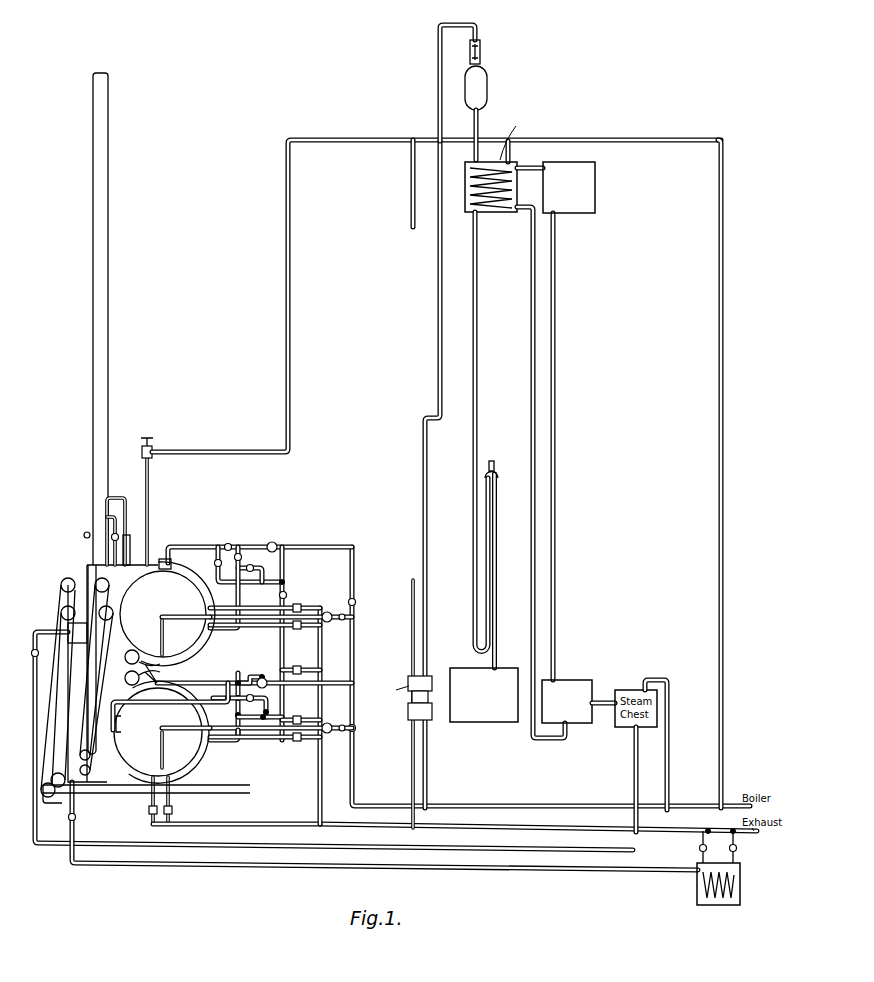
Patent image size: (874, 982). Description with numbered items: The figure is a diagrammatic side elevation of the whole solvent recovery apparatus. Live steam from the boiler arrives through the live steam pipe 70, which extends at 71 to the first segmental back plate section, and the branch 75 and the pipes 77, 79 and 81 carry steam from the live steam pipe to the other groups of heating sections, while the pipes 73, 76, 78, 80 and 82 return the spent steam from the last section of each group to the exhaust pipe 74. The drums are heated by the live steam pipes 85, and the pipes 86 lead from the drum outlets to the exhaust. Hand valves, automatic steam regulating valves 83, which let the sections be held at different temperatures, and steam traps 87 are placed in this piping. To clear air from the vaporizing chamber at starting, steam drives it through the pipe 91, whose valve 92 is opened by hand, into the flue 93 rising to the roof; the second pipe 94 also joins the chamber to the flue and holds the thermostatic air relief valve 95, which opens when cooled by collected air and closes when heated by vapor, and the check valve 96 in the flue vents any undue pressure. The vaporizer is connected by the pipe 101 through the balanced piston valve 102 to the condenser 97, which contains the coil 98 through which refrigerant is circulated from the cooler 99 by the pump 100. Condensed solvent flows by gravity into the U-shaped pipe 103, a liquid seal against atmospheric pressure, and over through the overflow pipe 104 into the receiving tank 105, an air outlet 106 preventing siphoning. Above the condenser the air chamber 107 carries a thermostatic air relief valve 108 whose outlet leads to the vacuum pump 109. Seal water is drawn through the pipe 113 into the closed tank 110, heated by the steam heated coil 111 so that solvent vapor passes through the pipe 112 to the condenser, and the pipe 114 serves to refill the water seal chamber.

The live steam pipe 70 is at (352, 786).
The live steam pipe extension 71 is at (168, 558).
The pipe 73 is at (258, 603).
The exhaust pipe 74 is at (330, 808).
The branch of the live steam pipe 75 is at (235, 630).
The pipe 76 is at (278, 668).
The pipe 77 is at (237, 686).
The pipe 78 is at (297, 717).
The pipe 79 is at (226, 743).
The pipe 80 is at (172, 803).
The pipe 81 is at (121, 723).
The pipe 82 is at (148, 808).
The automatic steam regulating valve 83 is at (275, 544).
The live steam pipe 85 is at (180, 612).
The pipe 86 is at (178, 625).
The steam trap 87 is at (296, 632).
The pipe 91 is at (110, 512).
The valve 92 is at (110, 538).
The flue 93 is at (93, 426).
The second pipe 94 is at (112, 497).
The thermostatic air relief valve 95 is at (133, 533).
The check valve 96 is at (87, 531).
The condenser 97 is at (480, 165).
The coil 98 is at (497, 200).
The cooler 99 is at (596, 207).
The pump 100 is at (574, 681).
The pipe 101 is at (346, 140).
The balanced piston valve 102 is at (154, 448).
The U-shaped pipe 103 is at (472, 550).
The overflow pipe 104 is at (497, 550).
The receiving tank 105 is at (492, 724).
The air outlet 106 is at (494, 461).
The air chamber 107 is at (485, 88).
The thermostatic air relief valve 108 is at (483, 52).
The vacuum pump 109 is at (409, 706).
The closed tank 110 is at (740, 903).
The steam heated coil 111 is at (735, 882).
The pipe 112 is at (722, 545).
The pipe 113 is at (568, 870).
The pipe 114 is at (546, 850).